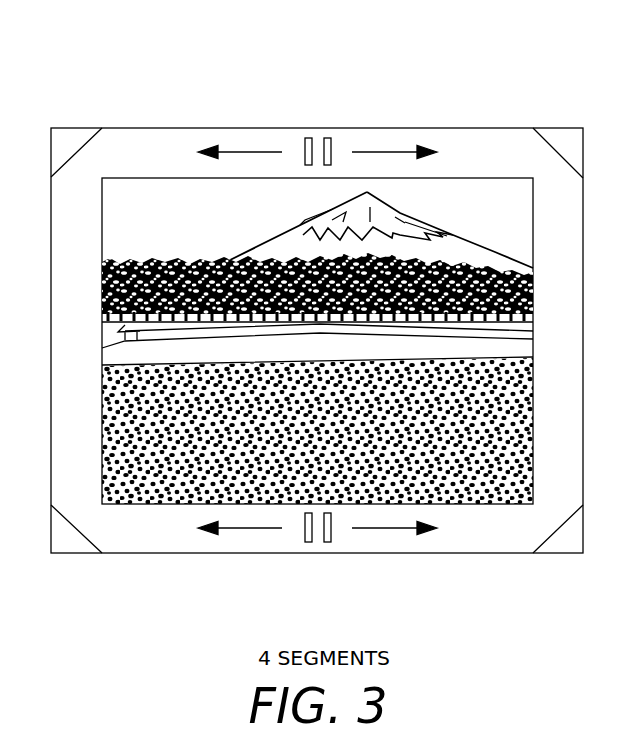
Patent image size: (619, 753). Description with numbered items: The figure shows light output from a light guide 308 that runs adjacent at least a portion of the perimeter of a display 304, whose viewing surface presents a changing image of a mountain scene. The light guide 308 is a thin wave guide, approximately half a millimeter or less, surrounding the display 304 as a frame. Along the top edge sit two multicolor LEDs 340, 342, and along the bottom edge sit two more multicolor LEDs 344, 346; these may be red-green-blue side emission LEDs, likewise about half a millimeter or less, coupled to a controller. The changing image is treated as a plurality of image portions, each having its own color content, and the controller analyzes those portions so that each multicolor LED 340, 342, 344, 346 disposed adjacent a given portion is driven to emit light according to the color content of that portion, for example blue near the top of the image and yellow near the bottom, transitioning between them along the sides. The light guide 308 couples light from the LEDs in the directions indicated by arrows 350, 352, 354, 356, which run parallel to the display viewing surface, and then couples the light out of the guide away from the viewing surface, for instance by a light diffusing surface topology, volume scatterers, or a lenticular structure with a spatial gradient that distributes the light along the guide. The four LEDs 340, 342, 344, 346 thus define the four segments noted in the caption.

The display 304 is at (163, 200).
The light guide 308 is at (66, 238).
The multicolor LED 340 is at (308, 138).
The multicolor LED 342 is at (328, 138).
The multicolor LED 344 is at (308, 542).
The multicolor LED 346 is at (327, 542).
The arrow 350 is at (240, 150).
The arrow 352 is at (397, 150).
The arrow 354 is at (240, 528).
The arrow 356 is at (395, 528).